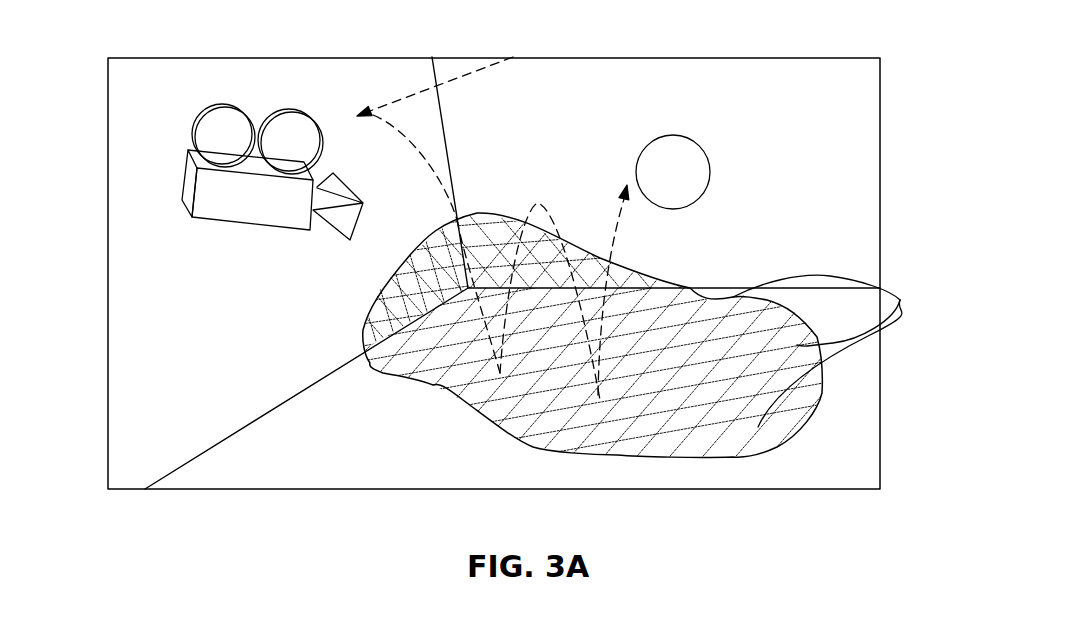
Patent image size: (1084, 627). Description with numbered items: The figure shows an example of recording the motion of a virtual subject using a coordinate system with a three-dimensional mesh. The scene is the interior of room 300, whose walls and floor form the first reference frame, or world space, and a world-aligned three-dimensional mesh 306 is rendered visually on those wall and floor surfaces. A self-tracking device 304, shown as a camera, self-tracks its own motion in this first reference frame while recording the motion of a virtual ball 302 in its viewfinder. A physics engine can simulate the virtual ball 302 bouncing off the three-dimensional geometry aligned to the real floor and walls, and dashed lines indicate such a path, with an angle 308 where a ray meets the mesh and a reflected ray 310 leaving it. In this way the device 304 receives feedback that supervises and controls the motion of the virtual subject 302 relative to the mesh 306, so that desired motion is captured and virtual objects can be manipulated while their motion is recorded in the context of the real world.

The room 300 is at (757, 42).
The virtual ball 302 is at (710, 172).
The self-tracking device 304 is at (196, 185).
The mesh 306 is at (843, 351).
The angle of incidence 308 is at (436, 184).
The reflected light ray 310 is at (597, 397).